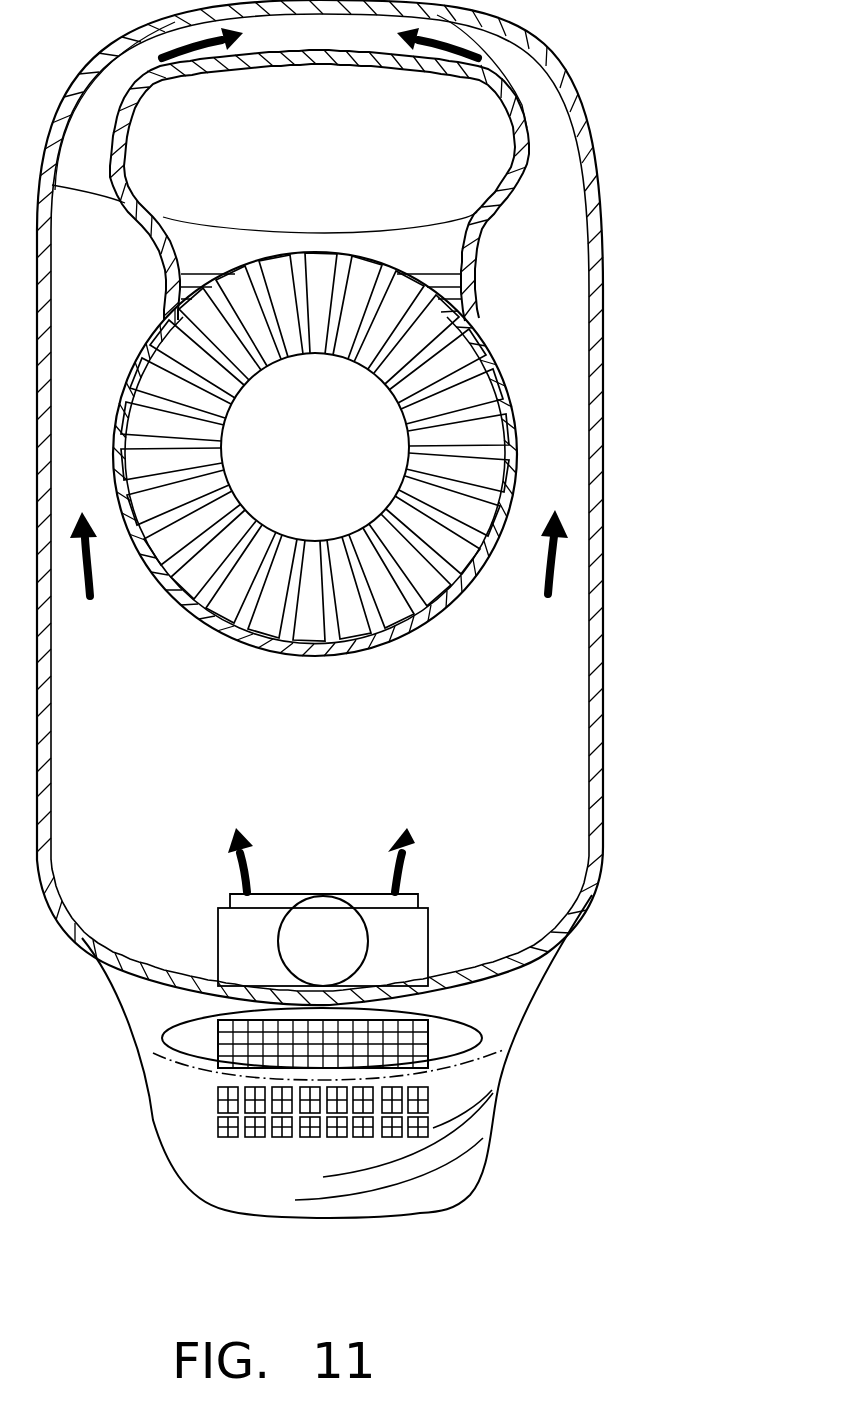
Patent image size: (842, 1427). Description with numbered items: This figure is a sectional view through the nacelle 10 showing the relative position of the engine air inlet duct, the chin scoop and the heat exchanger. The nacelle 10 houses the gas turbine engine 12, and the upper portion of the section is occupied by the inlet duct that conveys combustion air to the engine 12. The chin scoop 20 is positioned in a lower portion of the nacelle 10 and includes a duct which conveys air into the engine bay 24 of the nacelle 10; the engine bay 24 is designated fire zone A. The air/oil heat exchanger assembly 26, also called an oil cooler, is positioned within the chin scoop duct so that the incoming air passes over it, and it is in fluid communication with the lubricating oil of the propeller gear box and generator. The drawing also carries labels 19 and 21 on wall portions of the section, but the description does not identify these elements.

The nacelle 10 is at (589, 130).
The handle loop wall 19 is at (481, 263).
The gas turbine engine 12 is at (428, 582).
The fan housing ring 21 is at (228, 636).
The engine bay 24 is at (570, 757).
The chin scoop 20 is at (188, 1052).
The air/oil heat exchanger assembly 26 is at (440, 1037).